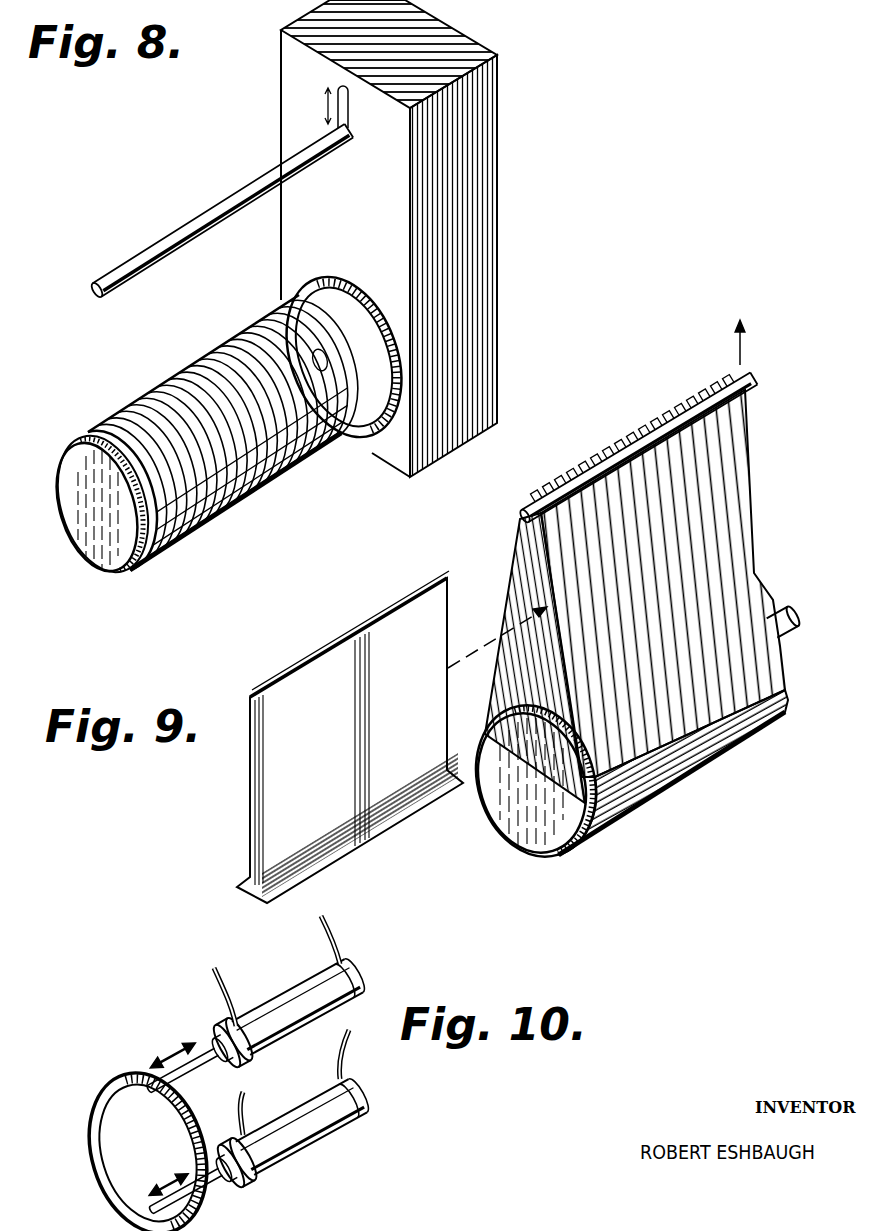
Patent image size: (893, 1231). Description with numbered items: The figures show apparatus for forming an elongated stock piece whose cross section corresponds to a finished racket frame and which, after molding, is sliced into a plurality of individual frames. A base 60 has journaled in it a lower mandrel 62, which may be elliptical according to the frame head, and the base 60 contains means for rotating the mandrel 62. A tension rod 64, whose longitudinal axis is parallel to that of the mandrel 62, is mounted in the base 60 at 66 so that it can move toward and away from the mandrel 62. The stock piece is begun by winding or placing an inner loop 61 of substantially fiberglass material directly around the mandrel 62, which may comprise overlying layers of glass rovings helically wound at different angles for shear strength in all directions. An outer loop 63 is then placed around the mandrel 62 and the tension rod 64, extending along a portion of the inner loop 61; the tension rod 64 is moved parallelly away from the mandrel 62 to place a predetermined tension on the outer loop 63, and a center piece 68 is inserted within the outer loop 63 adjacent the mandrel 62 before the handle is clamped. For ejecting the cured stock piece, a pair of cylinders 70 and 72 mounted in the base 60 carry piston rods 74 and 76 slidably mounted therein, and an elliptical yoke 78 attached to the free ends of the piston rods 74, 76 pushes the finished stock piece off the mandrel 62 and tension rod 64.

In FIG. 8, the base 60 is at (488, 148).
In FIG. 8, the inner loop 61 is at (192, 362).
In FIG. 9, the inner loop 61 is at (537, 723).
In FIG. 8, the lower mandrel 62 is at (86, 535).
In FIG. 9, the lower mandrel 62 is at (515, 805).
In FIG. 9, the outer loop 63 is at (735, 477).
In FIG. 8, the tension rod 64 is at (178, 240).
In FIG. 9, the tension rod 64 is at (517, 517).
In FIG. 8, the mounting location of tension rod 66 is at (349, 122).
In FIG. 9, the center piece 68 is at (360, 636).
In FIG. 10, the cylinder 70 is at (277, 1003).
In FIG. 10, the cylinder 72 is at (281, 1152).
In FIG. 10, the piston rod 74 is at (196, 1074).
In FIG. 10, the piston rod 76 is at (215, 1186).
In FIG. 8, the elliptical yoke 78 is at (378, 450).
In FIG. 10, the elliptical yoke 78 is at (93, 1130).